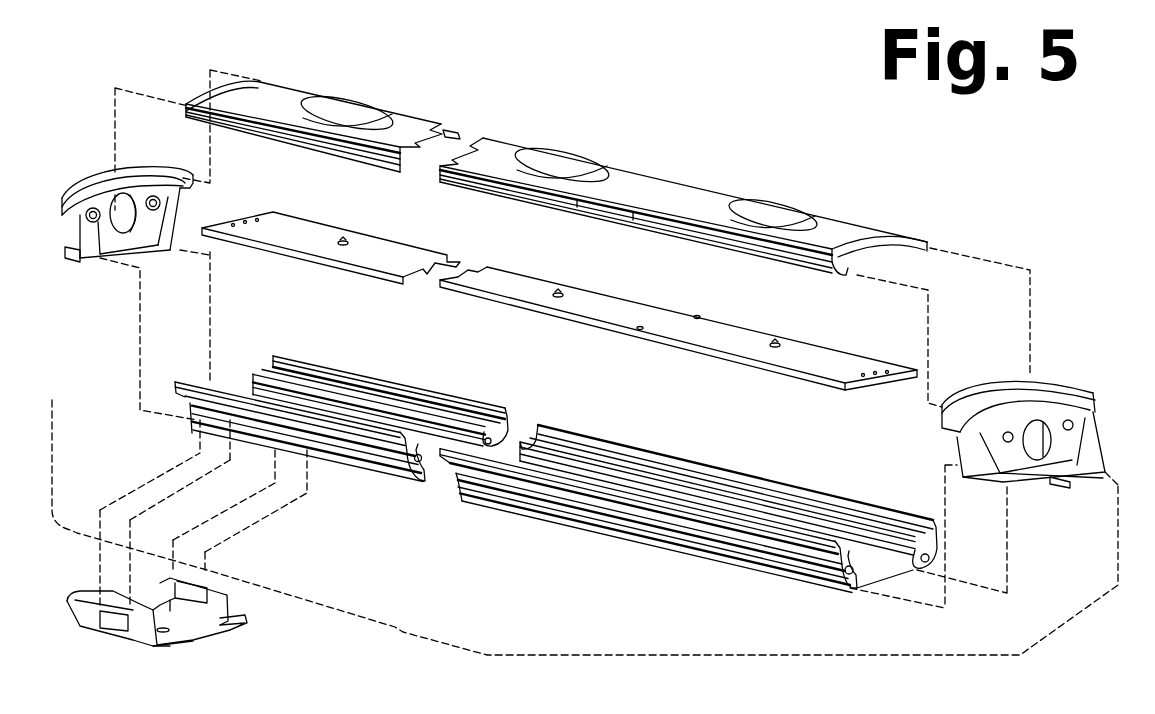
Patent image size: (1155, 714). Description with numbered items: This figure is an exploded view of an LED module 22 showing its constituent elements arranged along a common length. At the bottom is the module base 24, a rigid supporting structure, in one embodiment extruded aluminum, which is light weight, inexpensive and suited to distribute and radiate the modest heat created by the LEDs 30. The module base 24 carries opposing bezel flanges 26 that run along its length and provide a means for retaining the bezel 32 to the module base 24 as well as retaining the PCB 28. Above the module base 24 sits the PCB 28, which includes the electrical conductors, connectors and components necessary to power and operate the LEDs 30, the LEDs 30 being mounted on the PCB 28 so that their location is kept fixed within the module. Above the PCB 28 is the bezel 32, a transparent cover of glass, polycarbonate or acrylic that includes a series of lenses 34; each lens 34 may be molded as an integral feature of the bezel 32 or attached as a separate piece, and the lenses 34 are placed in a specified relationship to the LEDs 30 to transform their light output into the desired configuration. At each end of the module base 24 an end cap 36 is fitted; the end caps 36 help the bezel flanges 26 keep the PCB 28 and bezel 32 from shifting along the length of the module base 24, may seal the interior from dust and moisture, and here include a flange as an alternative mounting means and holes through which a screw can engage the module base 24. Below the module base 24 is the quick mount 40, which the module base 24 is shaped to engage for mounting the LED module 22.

The LED module 22 is at (397, 633).
The module base 24 is at (587, 464).
The bezel flanges 26 is at (273, 358).
The PCB 28 is at (559, 284).
The LEDs 30 is at (345, 241).
The bezel 32 is at (653, 185).
The lenses 34 is at (382, 102).
The end caps 36 is at (137, 222).
The quick mount 40 is at (222, 640).